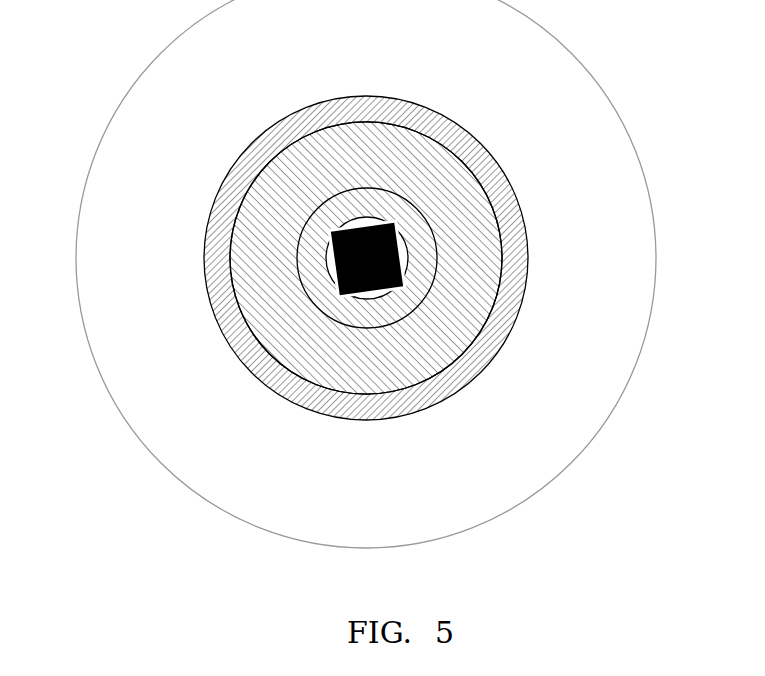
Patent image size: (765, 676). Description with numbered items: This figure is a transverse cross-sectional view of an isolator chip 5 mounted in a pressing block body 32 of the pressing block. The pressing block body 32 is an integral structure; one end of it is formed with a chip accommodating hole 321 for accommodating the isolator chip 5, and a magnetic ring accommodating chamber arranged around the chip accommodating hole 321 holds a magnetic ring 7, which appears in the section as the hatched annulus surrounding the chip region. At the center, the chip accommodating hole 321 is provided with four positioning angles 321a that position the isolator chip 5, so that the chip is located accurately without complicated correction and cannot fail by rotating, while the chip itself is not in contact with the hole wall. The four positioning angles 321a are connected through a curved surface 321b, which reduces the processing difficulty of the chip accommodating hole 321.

The pressing block body 32 is at (133, 362).
The magnetic ring 7 is at (250, 213).
The chip accommodating hole 321 is at (402, 237).
The positioning angle 321a is at (328, 213).
The curved surface 321b is at (332, 260).
The isolator chip 5 is at (400, 241).